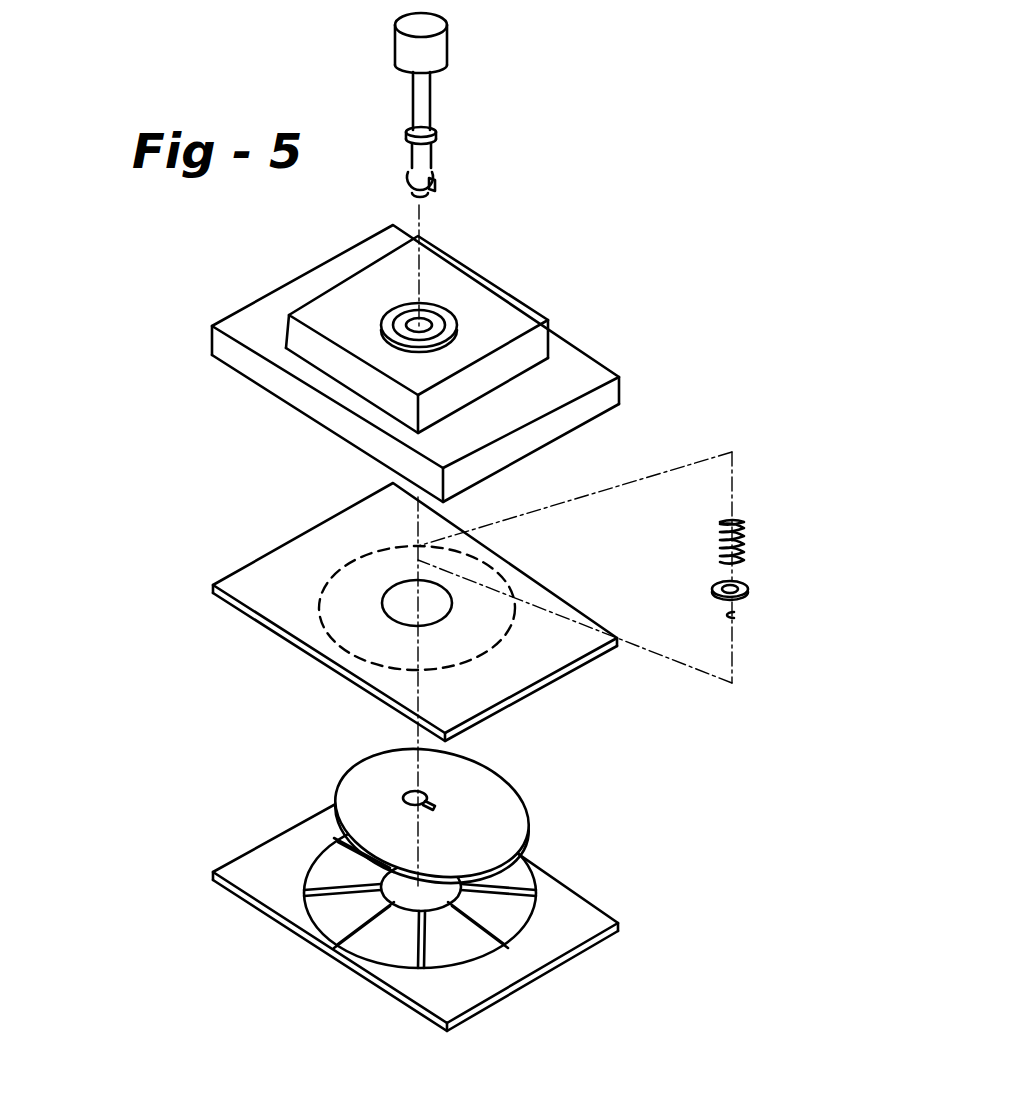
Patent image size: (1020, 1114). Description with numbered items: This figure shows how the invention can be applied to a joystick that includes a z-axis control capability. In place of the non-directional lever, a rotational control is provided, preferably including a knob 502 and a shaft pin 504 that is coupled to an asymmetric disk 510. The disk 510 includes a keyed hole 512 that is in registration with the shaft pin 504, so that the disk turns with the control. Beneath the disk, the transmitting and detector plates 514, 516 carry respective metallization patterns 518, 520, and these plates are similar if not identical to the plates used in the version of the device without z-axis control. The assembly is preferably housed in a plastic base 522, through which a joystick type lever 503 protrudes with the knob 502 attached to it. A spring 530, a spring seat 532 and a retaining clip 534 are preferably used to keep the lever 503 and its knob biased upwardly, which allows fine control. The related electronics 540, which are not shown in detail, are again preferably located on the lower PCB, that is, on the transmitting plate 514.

The knob 502 is at (440, 43).
The joystick type lever 503 is at (420, 113).
The shaft pin 504 is at (433, 181).
The asymmetric disk 510 is at (466, 816).
The keyed hole 512 is at (470, 793).
The transmitting plate 514 is at (560, 910).
The detector plate 516 is at (273, 608).
The metallization pattern 518 is at (337, 857).
The metallization pattern 520 is at (400, 650).
The plastic base 522 is at (248, 443).
The spring 530 is at (743, 540).
The spring seat 532 is at (748, 593).
The retaining clip 534 is at (735, 618).
The related electronics 540 is at (405, 900).